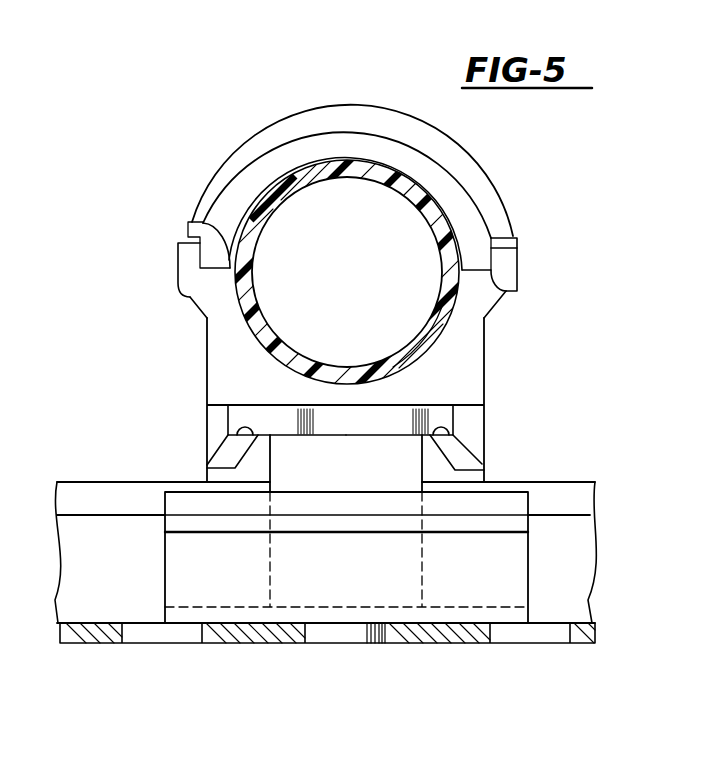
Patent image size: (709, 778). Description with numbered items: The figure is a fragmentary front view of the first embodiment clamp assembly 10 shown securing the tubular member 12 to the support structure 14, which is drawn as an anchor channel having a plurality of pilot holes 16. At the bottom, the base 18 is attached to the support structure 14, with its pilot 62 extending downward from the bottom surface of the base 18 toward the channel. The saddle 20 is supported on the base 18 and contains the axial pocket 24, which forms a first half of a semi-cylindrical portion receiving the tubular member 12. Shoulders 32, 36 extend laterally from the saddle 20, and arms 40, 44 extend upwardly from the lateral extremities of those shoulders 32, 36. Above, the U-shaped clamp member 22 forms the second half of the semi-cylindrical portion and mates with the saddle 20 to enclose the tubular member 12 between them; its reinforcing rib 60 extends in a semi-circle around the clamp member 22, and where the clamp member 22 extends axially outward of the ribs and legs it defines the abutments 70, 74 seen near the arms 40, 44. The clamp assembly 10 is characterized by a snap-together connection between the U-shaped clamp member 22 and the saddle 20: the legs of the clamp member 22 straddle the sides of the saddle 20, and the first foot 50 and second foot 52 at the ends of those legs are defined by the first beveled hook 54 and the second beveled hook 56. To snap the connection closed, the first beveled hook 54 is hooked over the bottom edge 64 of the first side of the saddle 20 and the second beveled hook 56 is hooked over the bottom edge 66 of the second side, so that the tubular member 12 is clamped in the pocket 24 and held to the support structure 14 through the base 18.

The clamp assembly 10 is at (178, 161).
The tubular member 12 is at (465, 230).
The support structure 14 is at (585, 569).
The pilot holes 16 is at (127, 626).
The base 18 is at (529, 541).
The saddle 20 is at (207, 372).
The U-shaped clamp member 22 is at (277, 146).
The axial pocket 24 is at (455, 350).
The shoulder 32 is at (193, 297).
The shoulder 36 is at (518, 292).
The arm 40 is at (192, 263).
The arm 44 is at (505, 263).
The first foot 50 is at (207, 452).
The second foot 52 is at (484, 445).
The first beveled hook 54 is at (207, 464).
The second beveled hook 56 is at (487, 466).
The reinforcing rib 60 is at (474, 163).
The pilot 62 is at (372, 643).
The bottom edge 64 is at (229, 433).
The bottom edge 66 is at (454, 434).
The abutment 70 is at (188, 222).
The abutment 74 is at (492, 238).